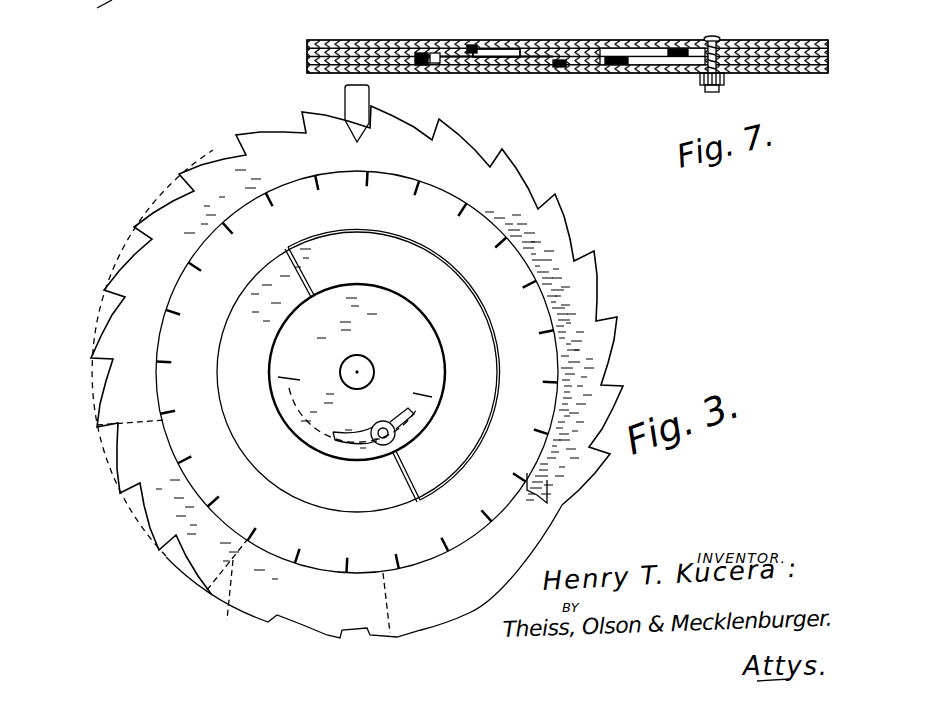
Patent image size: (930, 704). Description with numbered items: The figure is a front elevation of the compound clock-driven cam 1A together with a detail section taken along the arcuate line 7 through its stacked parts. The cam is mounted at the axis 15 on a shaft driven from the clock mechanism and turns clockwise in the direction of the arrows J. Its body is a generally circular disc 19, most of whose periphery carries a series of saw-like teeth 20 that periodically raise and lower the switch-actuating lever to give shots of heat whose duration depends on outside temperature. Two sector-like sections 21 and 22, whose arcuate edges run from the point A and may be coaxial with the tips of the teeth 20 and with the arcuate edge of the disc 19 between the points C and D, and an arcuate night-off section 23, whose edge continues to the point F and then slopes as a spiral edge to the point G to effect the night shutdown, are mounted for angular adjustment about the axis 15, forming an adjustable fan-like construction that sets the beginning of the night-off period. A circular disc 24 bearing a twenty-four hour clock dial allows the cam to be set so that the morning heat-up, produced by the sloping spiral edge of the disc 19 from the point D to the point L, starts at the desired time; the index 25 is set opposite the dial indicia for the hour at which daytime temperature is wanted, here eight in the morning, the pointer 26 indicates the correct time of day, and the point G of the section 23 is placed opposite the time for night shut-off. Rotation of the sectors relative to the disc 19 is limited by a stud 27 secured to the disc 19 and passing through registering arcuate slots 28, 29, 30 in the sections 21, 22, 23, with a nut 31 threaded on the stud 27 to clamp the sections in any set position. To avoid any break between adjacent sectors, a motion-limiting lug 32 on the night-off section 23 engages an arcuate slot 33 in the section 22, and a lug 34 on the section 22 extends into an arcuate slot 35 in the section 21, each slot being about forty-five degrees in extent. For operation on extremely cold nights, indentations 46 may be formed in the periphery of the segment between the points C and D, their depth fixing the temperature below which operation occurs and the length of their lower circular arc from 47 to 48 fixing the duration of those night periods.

In FIG. 3, the compound clock-driven cam 1A is at (615, 288).
In FIG. 3, the arcuate section line 7 is at (355, 401).
In FIG. 3, the axis of the compound cam 15 is at (362, 373).
In FIG. 3, the circular disc 19 is at (452, 152).
In FIG. 3, the saw-like teeth 20 is at (614, 330).
In FIG. 7, the sector-like section 21 is at (593, 49).
In FIG. 3, the sector-like section 21 is at (415, 636).
In FIG. 7, the sector-like section 22 is at (550, 59).
In FIG. 3, the sector-like section 22 is at (243, 528).
In FIG. 7, the arcuate night-off section 23 is at (560, 68).
In FIG. 3, the arcuate night-off section 23 is at (250, 150).
In FIG. 7, the circular dial disc 24 is at (485, 73).
In FIG. 3, the circular dial disc 24 is at (467, 227).
In FIG. 3, the index 25 is at (563, 498).
In FIG. 3, the pointer 26 is at (392, 122).
In FIG. 7, the stud 27 is at (712, 93).
In FIG. 3, the stud 27 is at (395, 434).
In FIG. 7, the arcuate slot 28 is at (685, 48).
In FIG. 7, the arcuate slot 29 is at (670, 58).
In FIG. 7, the arcuate slot 30 is at (640, 59).
In FIG. 7, the nut 31 is at (723, 87).
In FIG. 3, the nut 31 is at (375, 426).
In FIG. 7, the motion-limiting lug 32 is at (427, 51).
In FIG. 7, the arcuate slot 33 is at (450, 54).
In FIG. 7, the motion-limiting lug 34 is at (473, 48).
In FIG. 7, the arcuate slot 35 is at (505, 51).
In FIG. 3, the indentations 46 is at (291, 615).
In FIG. 3, the start of lower circular arc of indentation 47 is at (270, 617).
In FIG. 3, the end of lower circular arc of indentation 48 is at (302, 621).
In FIG. 3, the point A is at (207, 590).
In FIG. 3, the point C is at (268, 625).
In FIG. 3, the point D is at (470, 614).
In FIG. 3, the point F is at (130, 233).
In FIG. 3, the point G is at (247, 190).
In FIG. 3, the direction arrows J is at (176, 128).
In FIG. 3, the point L is at (565, 504).